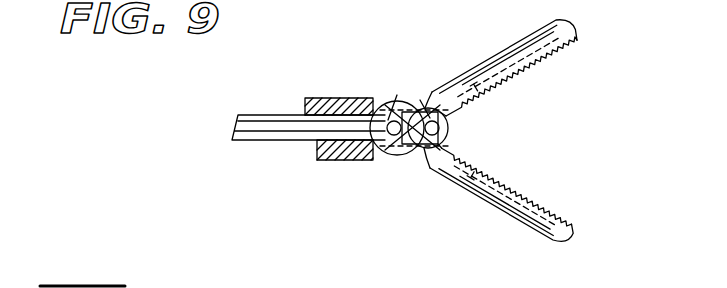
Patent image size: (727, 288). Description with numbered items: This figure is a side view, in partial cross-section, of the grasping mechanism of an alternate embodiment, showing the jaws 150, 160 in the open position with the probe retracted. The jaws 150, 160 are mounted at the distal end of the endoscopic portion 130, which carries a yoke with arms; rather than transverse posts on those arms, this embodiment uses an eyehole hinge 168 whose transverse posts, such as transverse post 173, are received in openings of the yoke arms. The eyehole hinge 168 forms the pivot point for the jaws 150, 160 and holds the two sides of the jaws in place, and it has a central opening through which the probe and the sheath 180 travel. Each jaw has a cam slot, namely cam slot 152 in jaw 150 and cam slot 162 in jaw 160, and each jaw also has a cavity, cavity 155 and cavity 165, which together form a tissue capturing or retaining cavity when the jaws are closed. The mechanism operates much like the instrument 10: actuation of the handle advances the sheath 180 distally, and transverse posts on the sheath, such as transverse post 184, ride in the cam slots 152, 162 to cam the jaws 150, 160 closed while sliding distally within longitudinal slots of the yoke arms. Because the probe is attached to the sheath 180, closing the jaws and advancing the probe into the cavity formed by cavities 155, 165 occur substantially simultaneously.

The instrument 10 is at (228, 128).
The endoscopic portion 130 is at (338, 158).
The jaw 150 is at (512, 45).
The cam slot 152 is at (420, 156).
The cavity 155 is at (509, 73).
The jaw 160 is at (530, 224).
The cam slot 162 is at (397, 95).
The cavity 165 is at (512, 192).
The eyehole hinge 168 is at (420, 100).
The transverse post 173 is at (436, 162).
The sheath 180 is at (271, 117).
The transverse post 184 is at (383, 100).